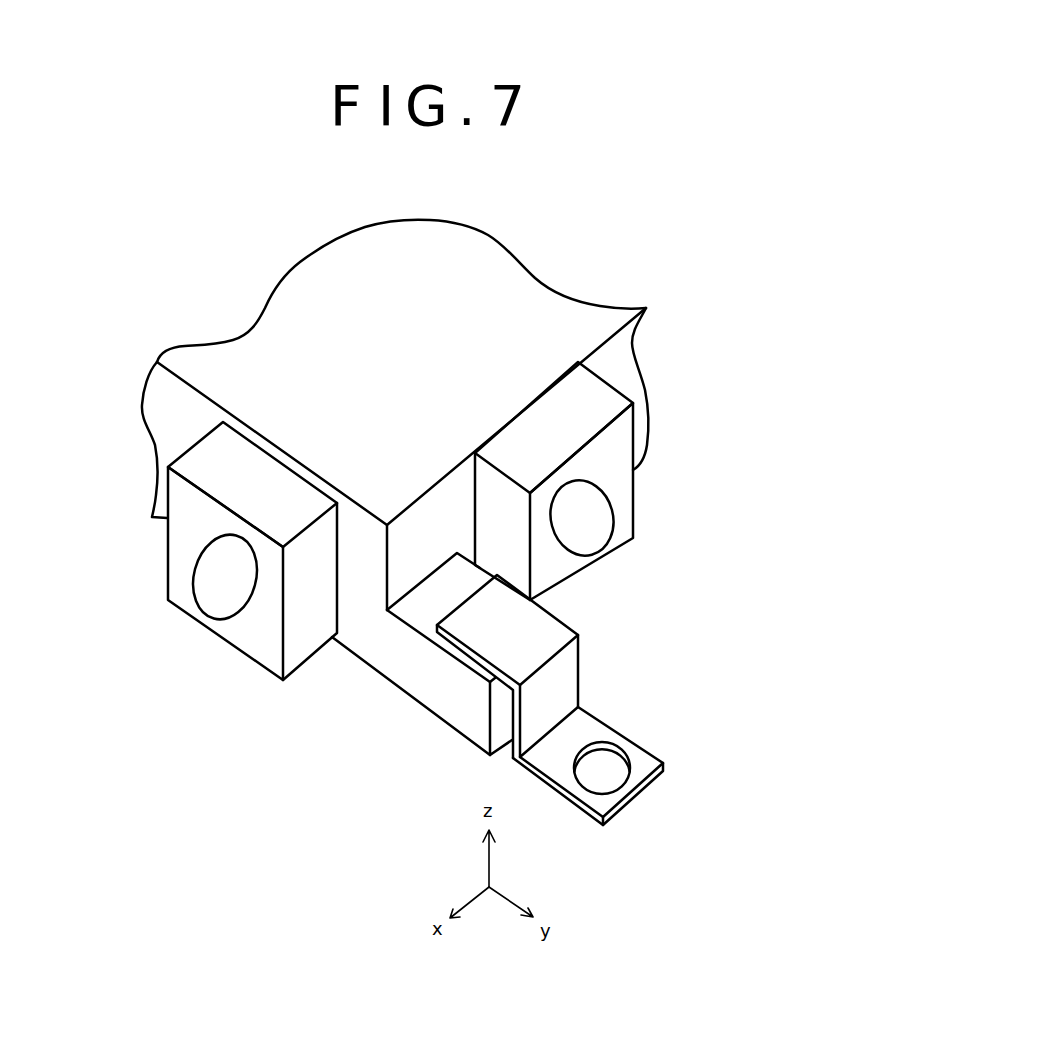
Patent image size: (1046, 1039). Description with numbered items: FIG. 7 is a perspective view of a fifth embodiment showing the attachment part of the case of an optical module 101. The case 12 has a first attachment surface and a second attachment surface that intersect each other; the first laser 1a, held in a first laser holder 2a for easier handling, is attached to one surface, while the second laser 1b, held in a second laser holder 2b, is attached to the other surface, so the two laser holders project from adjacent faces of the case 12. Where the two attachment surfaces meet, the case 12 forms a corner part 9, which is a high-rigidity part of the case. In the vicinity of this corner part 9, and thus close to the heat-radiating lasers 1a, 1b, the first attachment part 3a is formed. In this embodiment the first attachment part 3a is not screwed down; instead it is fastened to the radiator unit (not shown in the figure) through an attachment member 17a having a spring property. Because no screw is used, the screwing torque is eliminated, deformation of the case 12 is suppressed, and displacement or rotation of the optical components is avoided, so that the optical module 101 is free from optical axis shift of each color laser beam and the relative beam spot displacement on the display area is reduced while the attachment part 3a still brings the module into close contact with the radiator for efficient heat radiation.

The optical module 101 is at (423, 482).
The case 12 is at (612, 367).
The second laser 1b is at (222, 615).
The second laser holder 2b is at (217, 583).
The first laser holder 2a is at (612, 523).
The first laser 1a is at (585, 523).
The corner part 9 is at (383, 587).
The first attachment part 3a is at (560, 724).
The attachment member 17a is at (632, 775).